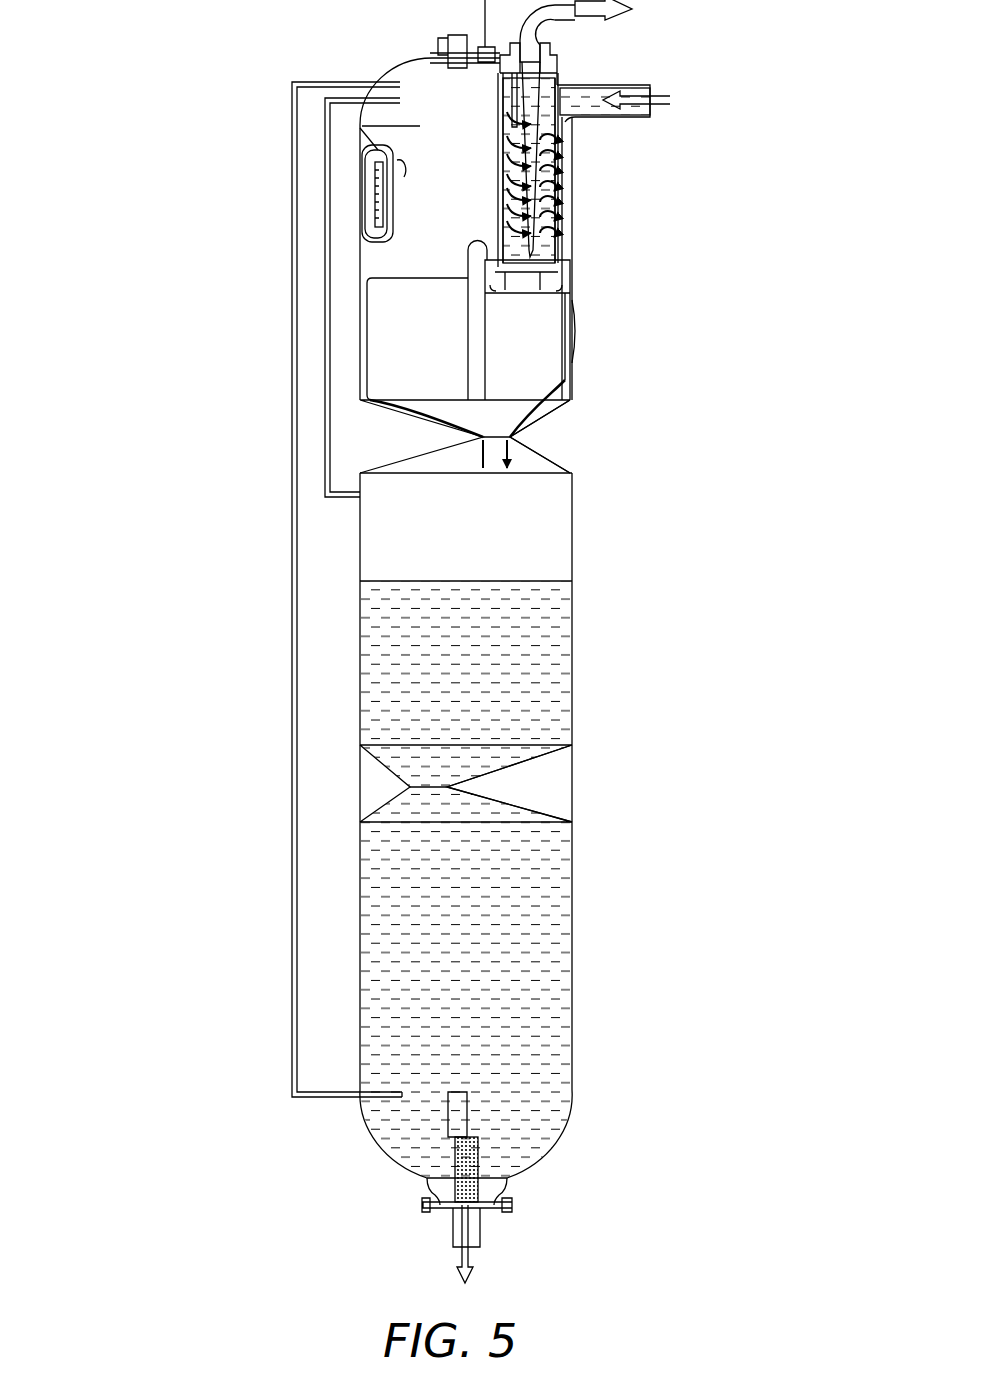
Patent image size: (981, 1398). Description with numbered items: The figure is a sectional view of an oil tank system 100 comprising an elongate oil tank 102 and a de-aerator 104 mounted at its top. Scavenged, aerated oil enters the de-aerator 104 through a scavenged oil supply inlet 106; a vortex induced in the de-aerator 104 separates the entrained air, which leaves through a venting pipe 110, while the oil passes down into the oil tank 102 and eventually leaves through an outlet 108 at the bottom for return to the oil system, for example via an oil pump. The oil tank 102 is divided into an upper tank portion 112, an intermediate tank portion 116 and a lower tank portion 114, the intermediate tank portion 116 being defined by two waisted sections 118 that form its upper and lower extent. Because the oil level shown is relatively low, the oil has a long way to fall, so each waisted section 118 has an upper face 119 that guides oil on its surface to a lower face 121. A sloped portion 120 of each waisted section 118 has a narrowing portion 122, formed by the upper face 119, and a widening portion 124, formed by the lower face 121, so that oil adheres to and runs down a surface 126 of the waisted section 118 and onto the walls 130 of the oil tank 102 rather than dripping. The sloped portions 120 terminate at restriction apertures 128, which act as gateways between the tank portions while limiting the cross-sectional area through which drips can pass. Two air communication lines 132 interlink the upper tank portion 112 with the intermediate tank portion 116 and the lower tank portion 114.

The oil tank system 100 is at (190, 52).
The oil tank 102 is at (574, 548).
The de-aerator 104 is at (562, 205).
The scavenged oil supply inlet 106 is at (652, 112).
The outlet 108 is at (480, 1225).
The venting pipe 110 is at (545, 25).
The upper tank portion 112 is at (365, 277).
The lower tank portion 114 is at (360, 953).
The intermediate tank portion 116 is at (360, 617).
The waisted section 118 is at (385, 430).
The upper face 119 is at (420, 405).
The sloped portion 120 is at (550, 432).
The lower face 121 is at (427, 457).
The narrowing portion 122 is at (510, 408).
The widening portion 124 is at (497, 450).
The surface 126 is at (420, 418).
The restriction aperture 128 is at (480, 438).
The walls 130 is at (360, 660).
The air communication line 132 is at (326, 320).